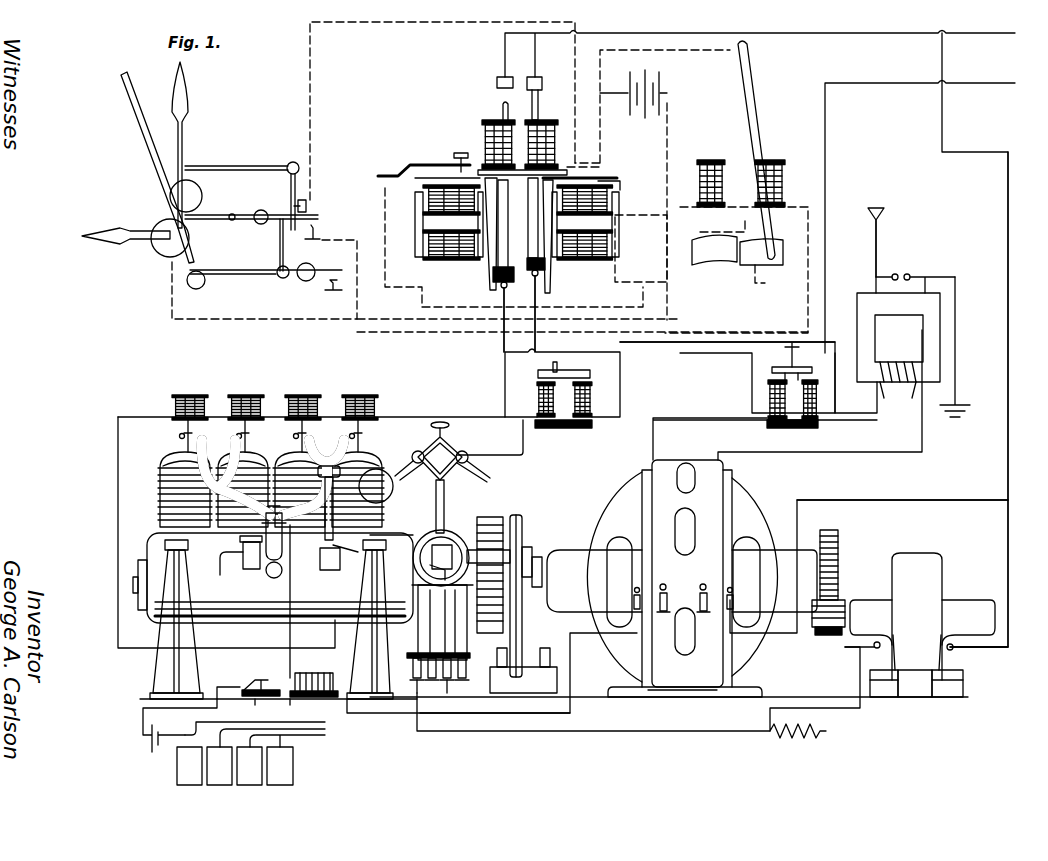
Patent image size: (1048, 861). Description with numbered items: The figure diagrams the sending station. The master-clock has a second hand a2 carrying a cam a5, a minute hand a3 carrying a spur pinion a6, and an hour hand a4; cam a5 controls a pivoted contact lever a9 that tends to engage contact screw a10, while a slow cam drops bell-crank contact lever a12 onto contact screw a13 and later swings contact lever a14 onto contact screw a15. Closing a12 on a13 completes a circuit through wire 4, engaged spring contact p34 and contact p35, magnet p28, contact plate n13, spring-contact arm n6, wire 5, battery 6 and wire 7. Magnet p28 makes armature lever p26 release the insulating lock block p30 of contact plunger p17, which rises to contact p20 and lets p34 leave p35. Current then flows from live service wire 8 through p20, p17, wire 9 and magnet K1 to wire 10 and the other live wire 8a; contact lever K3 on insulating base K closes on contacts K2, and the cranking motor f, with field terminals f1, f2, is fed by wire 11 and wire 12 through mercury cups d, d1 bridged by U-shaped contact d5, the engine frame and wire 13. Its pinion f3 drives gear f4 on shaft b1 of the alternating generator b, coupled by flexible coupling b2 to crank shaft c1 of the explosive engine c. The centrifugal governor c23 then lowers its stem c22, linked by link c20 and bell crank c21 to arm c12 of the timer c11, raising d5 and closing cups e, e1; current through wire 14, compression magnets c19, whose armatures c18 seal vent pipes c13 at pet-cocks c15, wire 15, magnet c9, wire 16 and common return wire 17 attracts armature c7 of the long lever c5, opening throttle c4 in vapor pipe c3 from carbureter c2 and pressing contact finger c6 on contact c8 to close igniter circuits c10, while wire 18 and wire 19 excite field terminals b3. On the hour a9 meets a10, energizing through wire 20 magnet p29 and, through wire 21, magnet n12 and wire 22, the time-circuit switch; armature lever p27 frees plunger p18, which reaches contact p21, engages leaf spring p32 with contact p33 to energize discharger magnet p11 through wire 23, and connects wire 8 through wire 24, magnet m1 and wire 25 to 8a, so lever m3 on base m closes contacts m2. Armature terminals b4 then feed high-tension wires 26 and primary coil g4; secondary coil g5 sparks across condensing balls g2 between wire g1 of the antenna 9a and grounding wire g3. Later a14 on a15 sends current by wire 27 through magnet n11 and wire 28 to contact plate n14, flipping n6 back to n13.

The dashed enclosure of clock controller circuit 4 is at (400, 25).
The dashed enclosure of clock mechanism 7 is at (200, 325).
The circuit wire 27 is at (345, 330).
The clock minute hand a2 is at (135, 118).
The clock hour hand a3 is at (186, 110).
The pointer arm a4 is at (112, 242).
The cam disc a5 is at (165, 255).
The cam disc a6 is at (168, 202).
The contact bar a9 is at (255, 275).
The contact a10 is at (325, 291).
The contact bar a12 is at (248, 152).
The contact bracket a13 is at (305, 198).
The contact bar a14 is at (262, 190).
The contact a15 is at (320, 228).
The main supply wire 8 is at (988, 45).
The branch wire 8a is at (978, 88).
The terminal block p21 is at (492, 90).
The terminal block p20 is at (542, 80).
The relay magnet coils p11 is at (495, 132).
The switch lever p33 is at (418, 165).
The contact screw p32 is at (448, 165).
The left electromagnet coils p29 is at (449, 222).
The right electromagnet coils p28 is at (600, 225).
The armature bar p18 is at (505, 218).
The armature bar p17 is at (530, 240).
The contact block p27 is at (490, 278).
The contact p30 is at (500, 290).
The lead wire p26 is at (552, 290).
The contact strip p34 is at (585, 178).
The contact p35 is at (625, 180).
The wire 9 is at (525, 295).
The dashed enclosure 20 is at (385, 222).
The dashed enclosure 21 is at (645, 258).
The battery wire 23 is at (598, 135).
The dashed enclosure of battery circuit 5 is at (610, 85).
The battery 6 is at (660, 93).
The pivoted lever n6 is at (755, 130).
The electromagnet coil n12 is at (697, 160).
The electromagnet coil n11 is at (785, 172).
The dashed enclosure 22 is at (737, 215).
The wire 28 is at (730, 232).
The contact segments n14 is at (737, 250).
The wire n13 is at (752, 280).
The antenna 9a is at (884, 212).
The antenna lead g1 is at (876, 263).
The spark gap contacts g2 is at (897, 272).
The induction coil g5 is at (898, 337).
The coil leads g4 is at (898, 401).
The ground connection g3 is at (960, 385).
The wire 24 is at (738, 355).
The wire 10 is at (680, 348).
The wire 25 is at (835, 400).
The armature m2 is at (785, 365).
The armature contact m3 is at (800, 367).
The electromagnet coils m1 is at (768, 400).
The relay base m is at (790, 428).
The wire 26 is at (710, 420).
The relay K is at (555, 428).
The relay coils K1 is at (537, 398).
The armature plate K3 is at (590, 375).
The contact K2 is at (557, 364).
The wire 14 is at (420, 415).
The wire 13 is at (523, 437).
The wire enclosure 15 is at (118, 545).
The engine cylinders and crankcase c is at (160, 463).
The spark coil c19 is at (172, 410).
The spark coil c18 is at (222, 385).
The spark plug c15 is at (186, 430).
The spark plug terminal c13 is at (182, 445).
The intake manifold c3 is at (233, 503).
The carburetor c4 is at (283, 545).
The oil cup c2 is at (250, 569).
The wire c5 is at (290, 634).
The governor ball c11 is at (372, 450).
The rod c12 is at (340, 565).
The crank shaft end c1 is at (133, 596).
The engine supports and base 16 is at (355, 720).
The circuit breaker c8 is at (255, 672).
The timer coil c9 is at (318, 666).
The wire c6 is at (268, 701).
The wire c7 is at (292, 701).
The battery c10 is at (143, 728).
The governor c23 is at (430, 470).
The governor housing c22 is at (445, 540).
The rod c20 is at (390, 545).
The lever c21 is at (425, 562).
The gear b2 is at (490, 530).
The shaft b1 is at (538, 545).
The commutator housing d5 is at (420, 648).
The brushes d is at (413, 668).
The brushes e is at (468, 668).
The wire e1 is at (445, 686).
The wire d1 is at (415, 700).
The base and wire 17 is at (465, 708).
The wire 19 is at (580, 712).
The wire with resistance 12 is at (688, 732).
The dynamo b is at (648, 500).
The dynamo terminals b4 is at (700, 588).
The dynamo shaft bearing b3 is at (740, 595).
The wire 11 is at (1010, 505).
The wire 18 is at (900, 498).
The gear f4 is at (838, 552).
The pinion f3 is at (845, 608).
The motor f is at (920, 575).
The motor terminal f1 is at (855, 642).
The motor terminal f2 is at (955, 650).